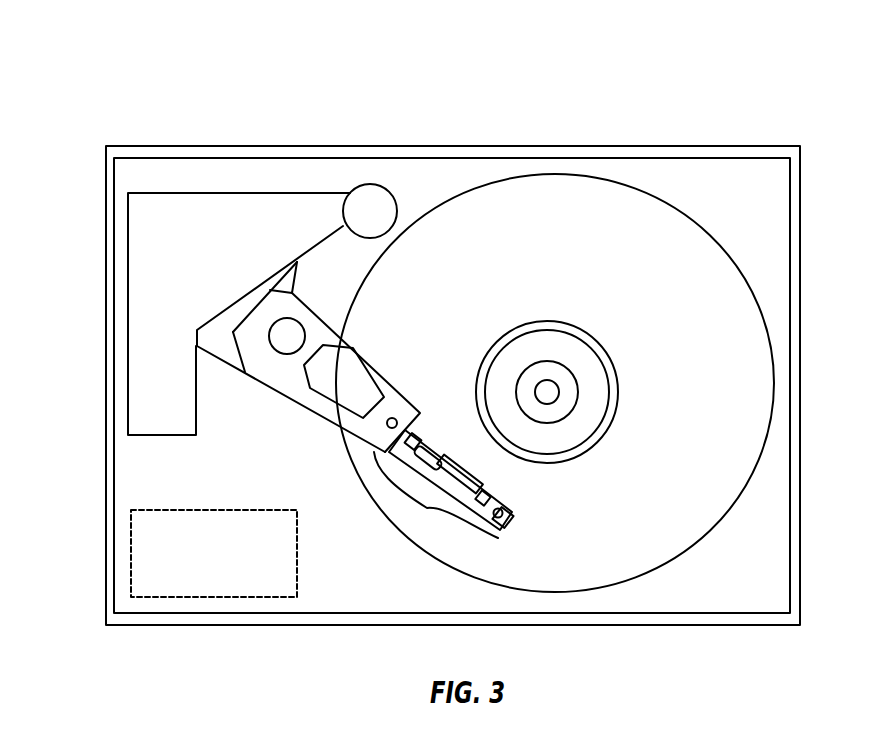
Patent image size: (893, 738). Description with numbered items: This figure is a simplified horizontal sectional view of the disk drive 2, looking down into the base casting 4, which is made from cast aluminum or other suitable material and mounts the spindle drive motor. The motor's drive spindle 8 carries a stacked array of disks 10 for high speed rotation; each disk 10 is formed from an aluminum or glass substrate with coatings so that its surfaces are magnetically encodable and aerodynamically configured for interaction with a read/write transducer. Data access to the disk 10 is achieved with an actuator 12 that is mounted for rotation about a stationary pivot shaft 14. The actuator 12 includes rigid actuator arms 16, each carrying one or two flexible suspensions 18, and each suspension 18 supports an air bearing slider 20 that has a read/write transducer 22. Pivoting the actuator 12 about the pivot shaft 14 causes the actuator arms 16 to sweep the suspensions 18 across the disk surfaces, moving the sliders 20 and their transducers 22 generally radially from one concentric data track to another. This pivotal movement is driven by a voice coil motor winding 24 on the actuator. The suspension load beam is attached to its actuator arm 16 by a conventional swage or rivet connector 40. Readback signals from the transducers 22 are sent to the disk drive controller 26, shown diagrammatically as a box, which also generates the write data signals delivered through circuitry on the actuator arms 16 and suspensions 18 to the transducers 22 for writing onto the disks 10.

The disk drive 2 is at (115, 53).
The base casting 4 is at (250, 147).
The drive spindle 8 is at (550, 393).
The disk 10 is at (570, 263).
The actuator 12 is at (275, 378).
The pivot shaft 14 is at (280, 323).
The actuator arm 16 is at (333, 415).
The suspension 18 is at (443, 485).
The air bearing slider 20 is at (518, 508).
The read/write transducer 22 is at (513, 522).
The voice coil motor winding 24 is at (297, 277).
The disk drive controller 26 is at (297, 592).
The swage or rivet connector 40 is at (394, 418).